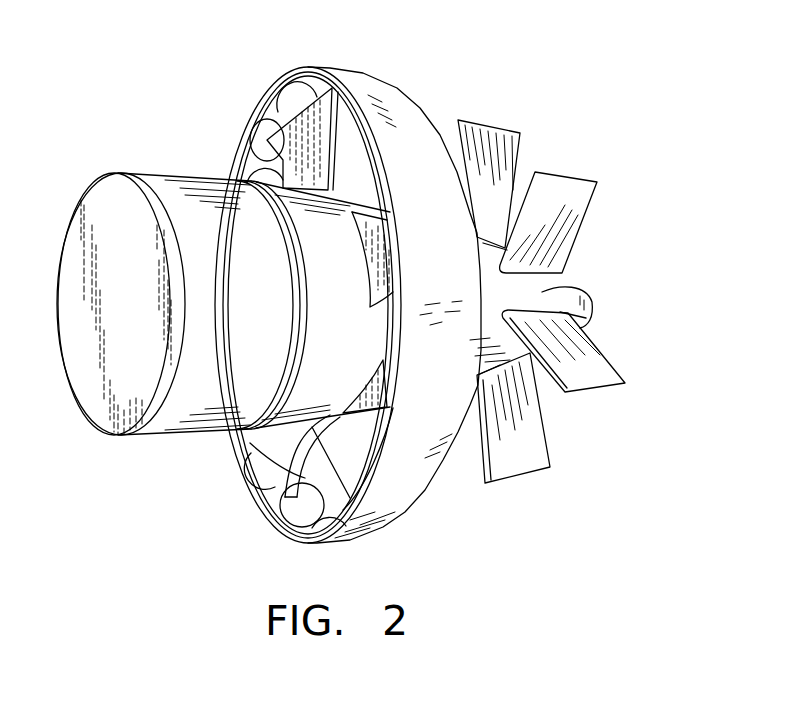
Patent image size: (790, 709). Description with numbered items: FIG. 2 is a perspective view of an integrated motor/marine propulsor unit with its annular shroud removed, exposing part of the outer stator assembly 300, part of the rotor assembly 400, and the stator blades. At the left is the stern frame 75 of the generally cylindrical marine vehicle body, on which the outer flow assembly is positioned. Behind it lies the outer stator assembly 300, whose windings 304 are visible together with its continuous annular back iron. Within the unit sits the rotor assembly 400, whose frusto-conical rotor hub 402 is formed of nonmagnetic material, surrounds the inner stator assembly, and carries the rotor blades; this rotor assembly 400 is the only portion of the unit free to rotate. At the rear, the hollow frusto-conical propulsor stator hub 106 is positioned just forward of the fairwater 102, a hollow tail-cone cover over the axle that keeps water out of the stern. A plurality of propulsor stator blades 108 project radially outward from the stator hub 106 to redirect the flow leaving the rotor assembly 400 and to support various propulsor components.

The stern frame 75 is at (181, 410).
The outer stator assembly 300 is at (403, 86).
The windings 304 is at (239, 138).
The rotor assembly 400 is at (291, 110).
The rotor hub 402 is at (280, 440).
The propulsor stator blades 108 is at (503, 132).
The propulsor stator hub 106 is at (542, 292).
The fairwater 102 is at (592, 310).